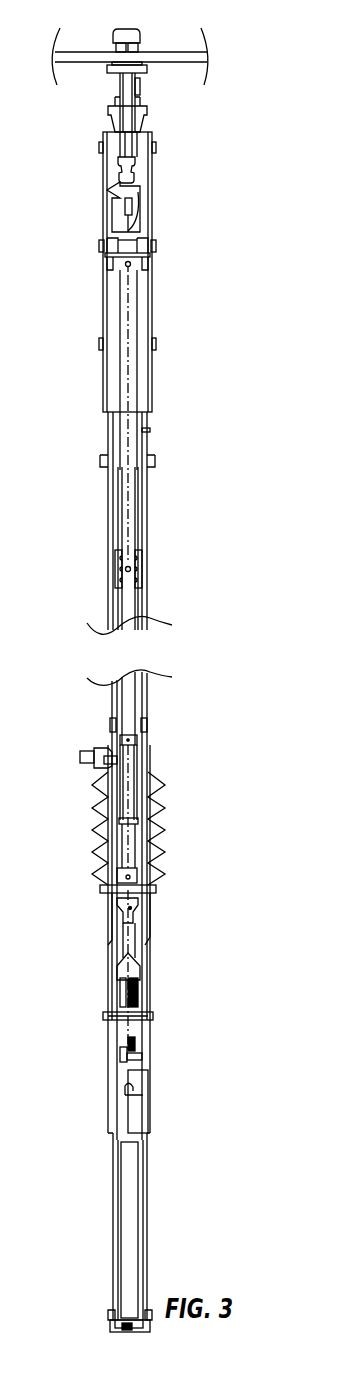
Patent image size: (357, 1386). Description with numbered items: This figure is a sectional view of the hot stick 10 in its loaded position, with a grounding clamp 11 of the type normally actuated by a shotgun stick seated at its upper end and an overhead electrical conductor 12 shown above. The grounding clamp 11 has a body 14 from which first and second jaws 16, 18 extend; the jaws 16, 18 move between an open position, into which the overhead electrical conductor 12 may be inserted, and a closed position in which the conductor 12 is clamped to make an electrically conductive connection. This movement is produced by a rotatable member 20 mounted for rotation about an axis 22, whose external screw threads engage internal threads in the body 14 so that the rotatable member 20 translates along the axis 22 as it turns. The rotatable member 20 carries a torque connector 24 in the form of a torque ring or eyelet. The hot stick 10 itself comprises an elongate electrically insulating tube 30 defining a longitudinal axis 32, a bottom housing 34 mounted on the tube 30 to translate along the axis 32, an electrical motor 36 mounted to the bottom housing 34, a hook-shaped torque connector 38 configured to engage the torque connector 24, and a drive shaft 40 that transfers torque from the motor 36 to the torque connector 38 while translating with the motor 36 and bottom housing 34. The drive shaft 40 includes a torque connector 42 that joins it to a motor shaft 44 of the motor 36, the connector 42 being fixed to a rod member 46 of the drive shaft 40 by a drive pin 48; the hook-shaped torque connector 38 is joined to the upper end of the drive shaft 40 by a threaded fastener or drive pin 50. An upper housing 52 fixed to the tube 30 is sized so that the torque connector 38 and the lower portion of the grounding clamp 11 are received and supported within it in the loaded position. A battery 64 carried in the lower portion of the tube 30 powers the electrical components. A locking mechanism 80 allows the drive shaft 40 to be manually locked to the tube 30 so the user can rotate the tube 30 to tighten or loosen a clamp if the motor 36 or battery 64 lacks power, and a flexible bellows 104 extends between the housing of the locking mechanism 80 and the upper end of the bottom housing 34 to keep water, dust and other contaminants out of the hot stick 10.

The hot stick 10 is at (204, 396).
The grounding clamp 11 is at (158, 30).
The overhead electrical conductor 12 is at (178, 63).
The body 14 is at (108, 110).
The first jaw 16 is at (109, 74).
The second jaw 18 is at (113, 40).
The rotatable member 20 is at (133, 160).
The axis 22 is at (128, 142).
The torque connector 24 is at (125, 208).
The elongate electrically insulating tube 30 is at (108, 508).
The longitudinal axis 32 is at (128, 313).
The bottom housing 34 is at (105, 1093).
The electrical motor 36 is at (142, 965).
The hook-shaped torque connector 38 is at (140, 192).
The drive shaft 40 is at (102, 700).
The torque connector 42 is at (145, 862).
The motor shaft 44 is at (131, 908).
The rod member 46 is at (122, 720).
The drive pin 48 is at (140, 882).
The drive pin 50 is at (150, 247).
The upper housing 52 is at (100, 305).
The battery 64 is at (121, 1224).
The locking mechanism 80 is at (72, 760).
The flexible bellows 104 is at (165, 800).